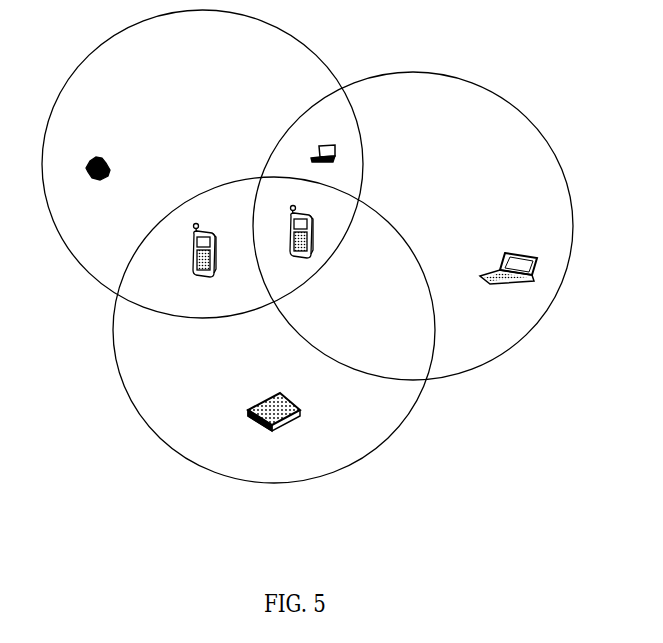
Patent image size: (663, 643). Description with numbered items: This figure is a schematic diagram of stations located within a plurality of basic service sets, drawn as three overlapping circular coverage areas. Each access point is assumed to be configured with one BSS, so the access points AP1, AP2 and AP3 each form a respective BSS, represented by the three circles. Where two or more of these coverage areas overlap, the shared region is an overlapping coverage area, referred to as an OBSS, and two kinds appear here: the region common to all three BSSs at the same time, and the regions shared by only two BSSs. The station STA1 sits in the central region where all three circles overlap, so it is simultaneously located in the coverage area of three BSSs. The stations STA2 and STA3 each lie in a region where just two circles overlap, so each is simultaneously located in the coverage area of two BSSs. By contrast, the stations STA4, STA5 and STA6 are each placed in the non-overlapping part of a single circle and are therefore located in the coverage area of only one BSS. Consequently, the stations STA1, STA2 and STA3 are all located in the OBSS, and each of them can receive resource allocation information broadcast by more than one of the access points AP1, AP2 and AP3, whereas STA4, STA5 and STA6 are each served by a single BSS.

The access point AP1 is at (202, 164).
The access point AP2 is at (274, 330).
The access point AP3 is at (413, 226).
The station STA1 is at (298, 223).
The station STA2 is at (329, 143).
The station STA3 is at (204, 263).
The station STA4 is at (97, 179).
The station STA5 is at (502, 258).
The station STA6 is at (274, 428).